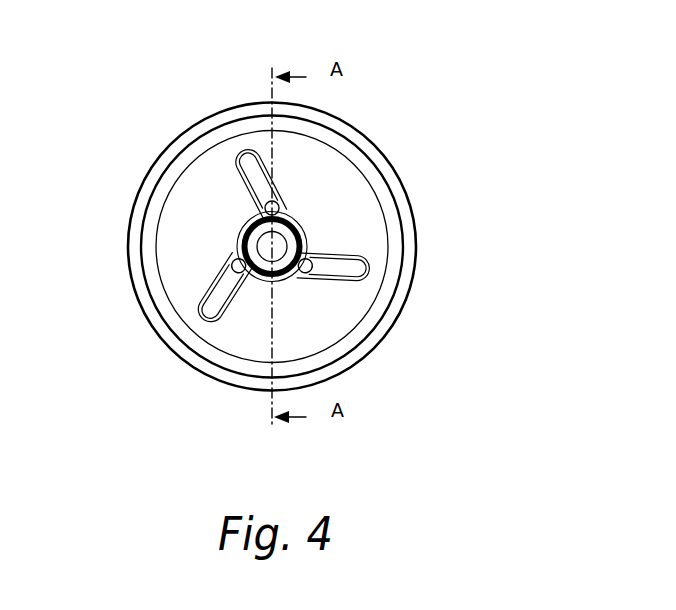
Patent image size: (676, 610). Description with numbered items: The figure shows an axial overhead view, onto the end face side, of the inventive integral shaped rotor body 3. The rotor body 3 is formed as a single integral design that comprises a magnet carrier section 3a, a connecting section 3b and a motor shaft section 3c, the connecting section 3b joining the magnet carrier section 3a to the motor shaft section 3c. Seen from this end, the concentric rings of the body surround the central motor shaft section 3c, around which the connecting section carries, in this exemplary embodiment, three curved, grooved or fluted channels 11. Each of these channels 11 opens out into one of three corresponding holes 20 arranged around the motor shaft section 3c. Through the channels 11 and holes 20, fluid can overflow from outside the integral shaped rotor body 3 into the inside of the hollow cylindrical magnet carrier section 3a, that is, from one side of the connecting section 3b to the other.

The integral shaped rotor body 3 is at (477, 162).
The magnet carrier section 3a is at (202, 366).
The connecting section 3b is at (329, 187).
The motor shaft section 3c is at (278, 272).
The curved channel 11 is at (257, 168).
The hole 20 is at (264, 206).